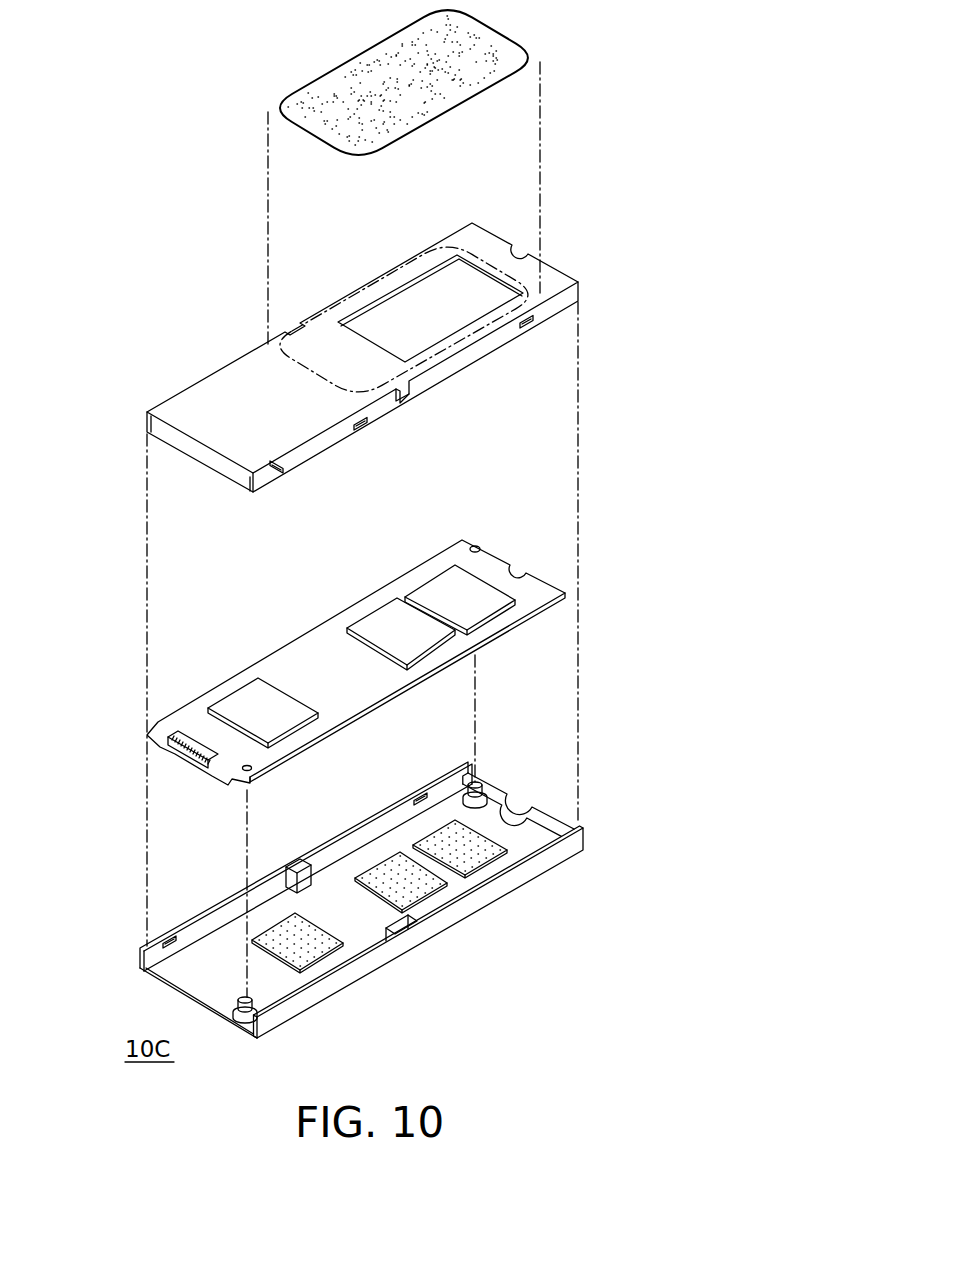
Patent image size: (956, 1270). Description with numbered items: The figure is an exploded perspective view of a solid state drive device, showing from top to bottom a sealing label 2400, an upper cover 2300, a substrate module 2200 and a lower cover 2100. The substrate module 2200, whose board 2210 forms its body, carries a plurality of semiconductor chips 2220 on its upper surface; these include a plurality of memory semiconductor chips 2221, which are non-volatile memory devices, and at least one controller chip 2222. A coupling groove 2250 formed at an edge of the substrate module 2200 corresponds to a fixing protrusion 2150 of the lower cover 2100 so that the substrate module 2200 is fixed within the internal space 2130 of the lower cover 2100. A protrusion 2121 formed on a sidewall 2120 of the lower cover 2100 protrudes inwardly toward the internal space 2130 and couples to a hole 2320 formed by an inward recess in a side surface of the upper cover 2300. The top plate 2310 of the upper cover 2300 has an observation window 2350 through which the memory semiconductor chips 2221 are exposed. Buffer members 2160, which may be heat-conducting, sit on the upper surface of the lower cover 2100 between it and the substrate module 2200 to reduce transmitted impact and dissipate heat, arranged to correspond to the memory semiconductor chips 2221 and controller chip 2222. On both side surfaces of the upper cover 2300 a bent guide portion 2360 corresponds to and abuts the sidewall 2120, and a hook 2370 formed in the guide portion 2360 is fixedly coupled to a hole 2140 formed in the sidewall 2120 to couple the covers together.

The sealing label 2400 is at (543, 31).
The upper cover 2300 is at (374, 337).
The cover top plate 2310 is at (480, 258).
The observation window 2350 is at (418, 305).
The hole 2320 is at (408, 396).
The guide portion 2360 is at (145, 428).
The hook 2370 is at (368, 429).
The substrate module 2200 is at (414, 645).
The printed circuit board 2210 is at (343, 693).
The semiconductor chips 2220 is at (361, 638).
The memory semiconductor chips 2221 is at (377, 617).
The controller chip 2222 is at (268, 702).
The coupling groove 2250 is at (477, 545).
The lower cover 2100 is at (361, 896).
The sidewall 2120 is at (140, 957).
The protrusion 2121 is at (300, 865).
The internal space 2130 is at (343, 925).
The hole 2140 is at (422, 797).
The fixing protrusion 2150 is at (498, 790).
The buffer member 2160 is at (418, 886).